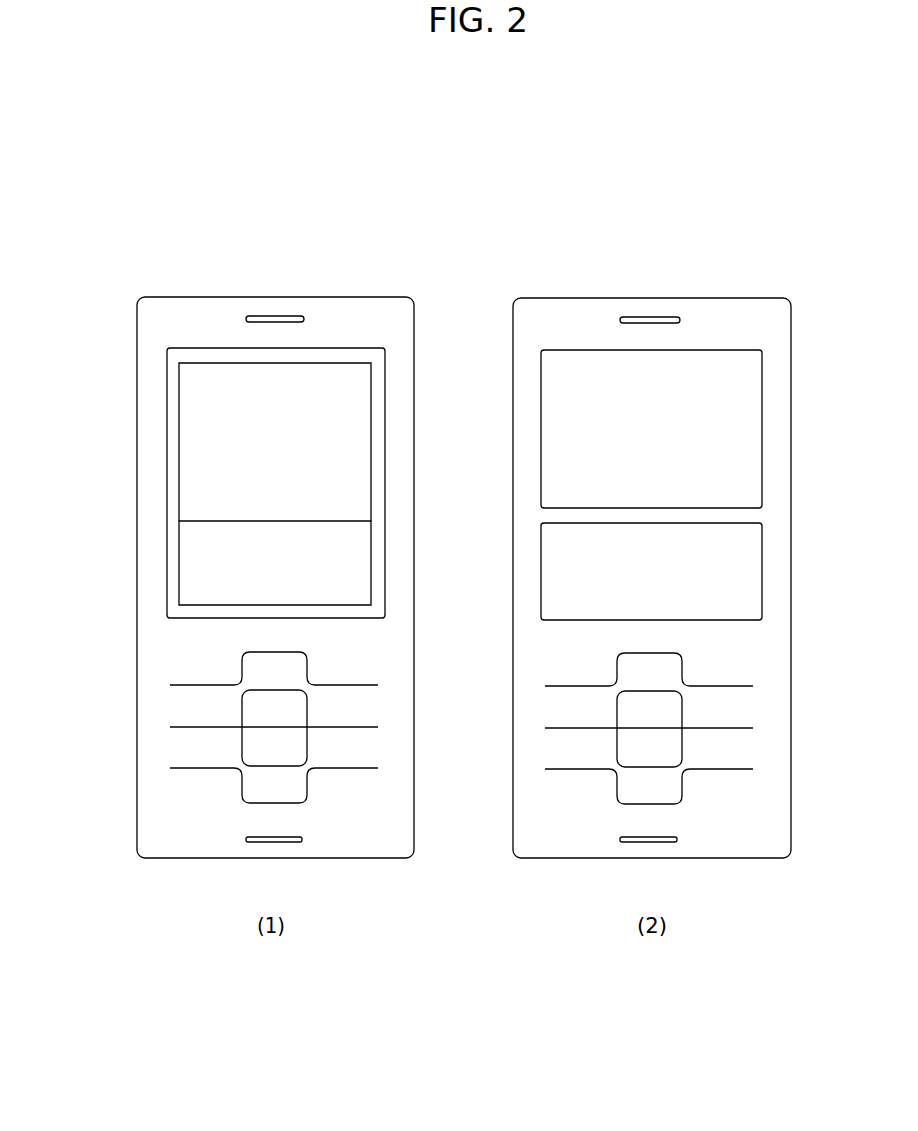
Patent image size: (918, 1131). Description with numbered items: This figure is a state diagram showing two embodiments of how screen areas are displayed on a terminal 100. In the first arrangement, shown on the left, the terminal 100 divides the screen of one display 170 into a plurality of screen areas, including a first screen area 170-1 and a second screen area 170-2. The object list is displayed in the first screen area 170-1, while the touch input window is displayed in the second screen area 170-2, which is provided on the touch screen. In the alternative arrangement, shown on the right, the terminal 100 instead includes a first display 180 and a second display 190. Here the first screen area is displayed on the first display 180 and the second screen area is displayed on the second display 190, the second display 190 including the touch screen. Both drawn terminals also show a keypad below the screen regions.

The terminal 100 is at (215, 288).
The display 170 is at (341, 348).
The first screen area 170-1 is at (195, 468).
The second screen area 170-2 is at (190, 560).
The first display 180 is at (747, 418).
The second display 190 is at (747, 565).